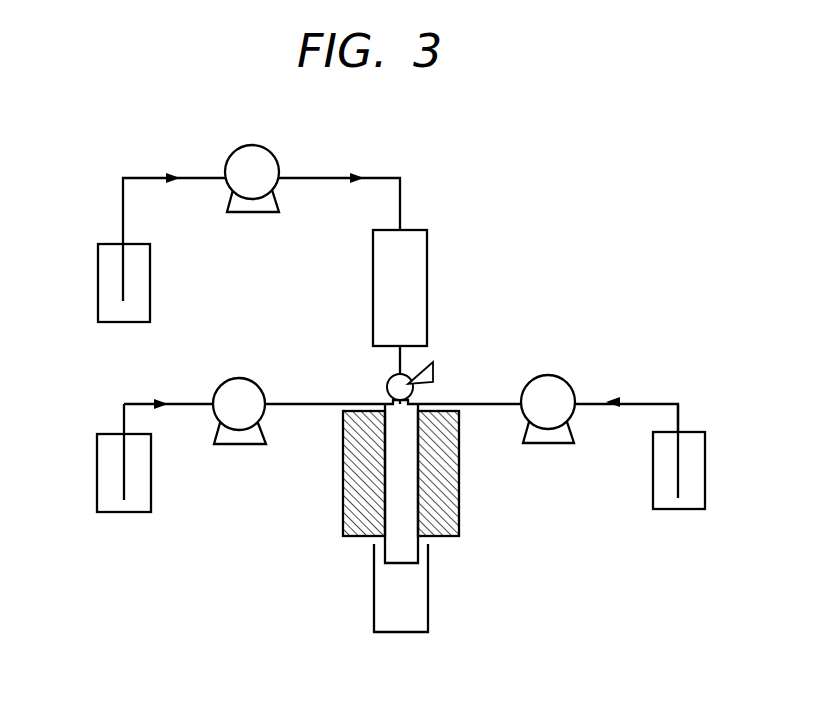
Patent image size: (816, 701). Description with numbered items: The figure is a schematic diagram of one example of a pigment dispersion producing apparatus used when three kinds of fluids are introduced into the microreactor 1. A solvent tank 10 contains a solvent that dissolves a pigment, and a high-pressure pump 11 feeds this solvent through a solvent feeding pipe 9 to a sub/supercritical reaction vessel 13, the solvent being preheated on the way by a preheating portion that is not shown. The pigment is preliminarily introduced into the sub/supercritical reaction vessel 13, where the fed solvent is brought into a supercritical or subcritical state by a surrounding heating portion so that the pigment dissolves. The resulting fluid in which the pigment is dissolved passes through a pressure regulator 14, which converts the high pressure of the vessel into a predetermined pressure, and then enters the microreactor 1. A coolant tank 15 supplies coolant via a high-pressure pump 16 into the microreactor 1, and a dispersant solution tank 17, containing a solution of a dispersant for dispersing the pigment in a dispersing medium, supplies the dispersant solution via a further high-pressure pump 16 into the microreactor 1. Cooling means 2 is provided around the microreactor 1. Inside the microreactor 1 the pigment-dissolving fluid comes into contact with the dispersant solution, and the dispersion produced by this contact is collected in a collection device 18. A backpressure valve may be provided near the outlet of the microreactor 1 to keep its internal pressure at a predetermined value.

The microreactor 1 is at (393, 475).
The cooling means 2 is at (355, 521).
The solvent feeding pipe 9 is at (316, 177).
The solvent tank 10 is at (104, 284).
The high-pressure pump 11 is at (240, 146).
The sub/supercritical reaction vessel 13 is at (419, 248).
The pressure regulator 14 is at (433, 372).
The coolant tank 15 is at (103, 488).
The high-pressure pump 16 is at (256, 378).
The dispersant solution tank 17 is at (701, 457).
The collection device 18 is at (388, 598).